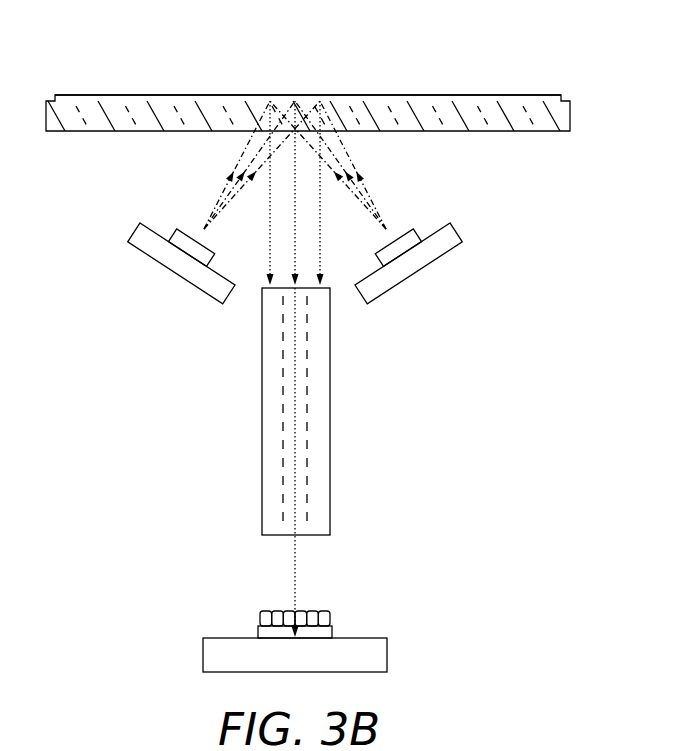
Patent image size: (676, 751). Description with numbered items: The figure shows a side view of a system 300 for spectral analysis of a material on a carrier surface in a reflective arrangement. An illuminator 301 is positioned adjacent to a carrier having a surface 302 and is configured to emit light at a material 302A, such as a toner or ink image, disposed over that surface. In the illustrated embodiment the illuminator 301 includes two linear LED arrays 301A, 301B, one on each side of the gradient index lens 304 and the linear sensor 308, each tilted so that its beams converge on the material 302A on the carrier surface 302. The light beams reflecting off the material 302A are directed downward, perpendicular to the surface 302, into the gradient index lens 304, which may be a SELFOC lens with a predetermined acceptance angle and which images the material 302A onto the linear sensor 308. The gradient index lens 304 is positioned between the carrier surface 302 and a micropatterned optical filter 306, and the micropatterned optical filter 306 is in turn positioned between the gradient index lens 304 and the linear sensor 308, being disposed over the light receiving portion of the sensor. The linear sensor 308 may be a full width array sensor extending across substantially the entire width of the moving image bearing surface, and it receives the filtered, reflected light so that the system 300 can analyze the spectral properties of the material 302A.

The system 300 is at (120, 49).
The illuminator 301 is at (191, 231).
The linear LED array 301A is at (178, 273).
The linear LED array 301B is at (418, 279).
The carrier surface 302 is at (178, 133).
The material 302A is at (334, 132).
The gradient index lens 304 is at (331, 413).
The micropatterned optical filter 306 is at (331, 619).
The linear sensor 308 is at (259, 633).